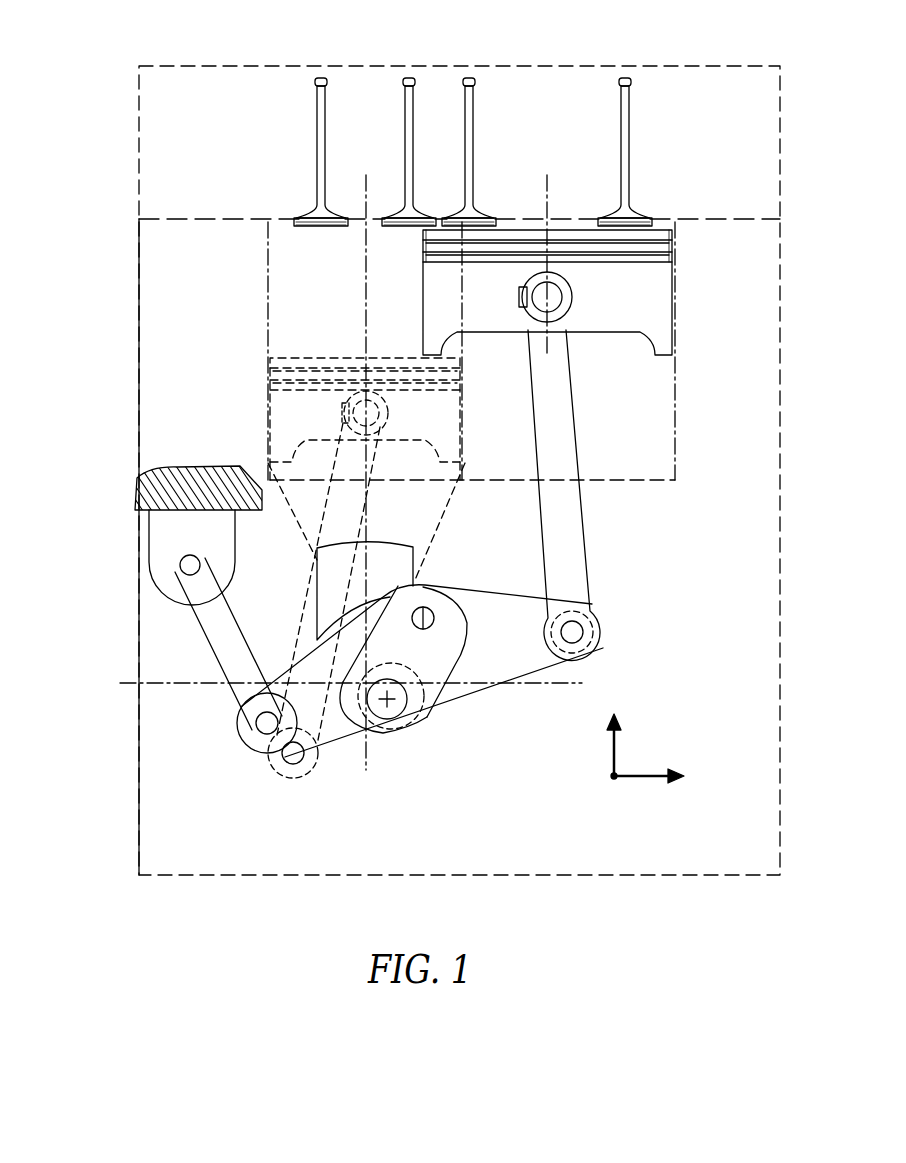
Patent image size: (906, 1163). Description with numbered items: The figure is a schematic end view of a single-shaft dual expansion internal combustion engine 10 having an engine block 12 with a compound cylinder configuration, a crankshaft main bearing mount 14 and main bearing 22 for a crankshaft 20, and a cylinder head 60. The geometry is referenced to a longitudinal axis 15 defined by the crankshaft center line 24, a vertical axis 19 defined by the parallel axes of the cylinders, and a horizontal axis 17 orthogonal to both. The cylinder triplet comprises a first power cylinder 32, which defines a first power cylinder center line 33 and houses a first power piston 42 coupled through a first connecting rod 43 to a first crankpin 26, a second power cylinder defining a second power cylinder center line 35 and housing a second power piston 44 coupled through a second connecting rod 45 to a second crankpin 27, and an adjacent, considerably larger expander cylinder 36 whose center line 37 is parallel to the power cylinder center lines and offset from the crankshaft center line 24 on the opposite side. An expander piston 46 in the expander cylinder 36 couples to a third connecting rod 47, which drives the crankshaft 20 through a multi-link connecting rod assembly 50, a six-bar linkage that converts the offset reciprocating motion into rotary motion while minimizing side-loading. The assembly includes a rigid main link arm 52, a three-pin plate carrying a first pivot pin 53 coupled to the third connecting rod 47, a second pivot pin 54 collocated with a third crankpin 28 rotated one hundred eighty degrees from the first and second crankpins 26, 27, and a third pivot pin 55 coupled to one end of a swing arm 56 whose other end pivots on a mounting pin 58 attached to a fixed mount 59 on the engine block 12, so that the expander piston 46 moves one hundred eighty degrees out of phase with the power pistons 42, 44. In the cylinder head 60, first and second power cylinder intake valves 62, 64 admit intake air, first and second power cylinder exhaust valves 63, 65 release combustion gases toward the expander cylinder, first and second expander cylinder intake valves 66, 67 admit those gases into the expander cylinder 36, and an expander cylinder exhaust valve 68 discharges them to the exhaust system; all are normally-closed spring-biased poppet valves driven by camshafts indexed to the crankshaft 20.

The single-shaft dual expansion internal combustion engine 10 is at (116, 58).
The engine block 12 is at (139, 233).
The crankshaft main bearing mount 14 is at (395, 566).
The longitudinal axis 15 is at (614, 778).
The horizontal axis 17 is at (632, 778).
The vertical axis 19 is at (614, 745).
The crankshaft 20 is at (348, 640).
The main bearing 22 is at (327, 596).
The crankshaft center line 24 is at (400, 718).
The first crankpin 26 is at (253, 778).
The second crankpin 27 is at (285, 778).
The third crankpin 28 is at (430, 630).
The first power cylinder 32 is at (268, 235).
The first power cylinder center line 33 is at (305, 455).
The second power cylinder center line 35 is at (366, 185).
The expander cylinder 36 is at (591, 256).
The expander cylinder center line 37 is at (547, 185).
The first power piston 42 is at (315, 429).
The first connecting rod 43 is at (329, 468).
The second power piston 44 is at (315, 429).
The second connecting rod 45 is at (328, 518).
The expander piston 46 is at (645, 265).
The third connecting rod 47 is at (566, 520).
The multi-link connecting rod assembly 50 is at (468, 671).
The main link arm 52 is at (606, 648).
The first pivot pin 53 is at (575, 630).
The second pivot pin 54 is at (477, 669).
The third pivot pin 55 is at (258, 735).
The swing arm 56 is at (210, 660).
The mounting pin 58 is at (180, 570).
The fixed mount 59 is at (150, 490).
The cylinder head 60 is at (139, 124).
The first power cylinder intake valve 62 is at (280, 124).
The first power cylinder exhaust valve 63 is at (374, 124).
The second power cylinder intake valve 64 is at (315, 90).
The second power cylinder exhaust valve 65 is at (409, 90).
The first expander cylinder intake valve 66 is at (509, 124).
The second expander cylinder intake valve 67 is at (471, 90).
The expander cylinder exhaust valve 68 is at (627, 90).